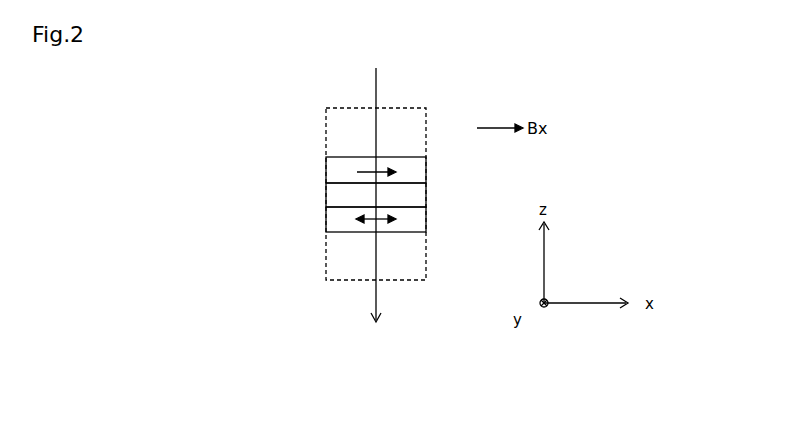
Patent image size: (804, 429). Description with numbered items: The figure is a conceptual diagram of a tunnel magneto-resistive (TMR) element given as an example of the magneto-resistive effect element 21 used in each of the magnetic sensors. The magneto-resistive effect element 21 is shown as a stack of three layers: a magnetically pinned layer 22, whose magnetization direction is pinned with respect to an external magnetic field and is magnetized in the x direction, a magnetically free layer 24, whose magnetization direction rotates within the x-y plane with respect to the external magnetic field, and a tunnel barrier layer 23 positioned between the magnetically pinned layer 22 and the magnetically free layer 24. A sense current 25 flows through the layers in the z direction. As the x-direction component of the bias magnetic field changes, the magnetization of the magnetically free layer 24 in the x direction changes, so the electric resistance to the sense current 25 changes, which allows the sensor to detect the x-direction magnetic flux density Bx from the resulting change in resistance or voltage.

The magneto-resistive effect element 21 is at (423, 93).
The magnetically pinned layer 22 is at (426, 168).
The tunnel barrier layer 23 is at (426, 195).
The magnetically free layer 24 is at (426, 222).
The sense current 25 is at (373, 97).